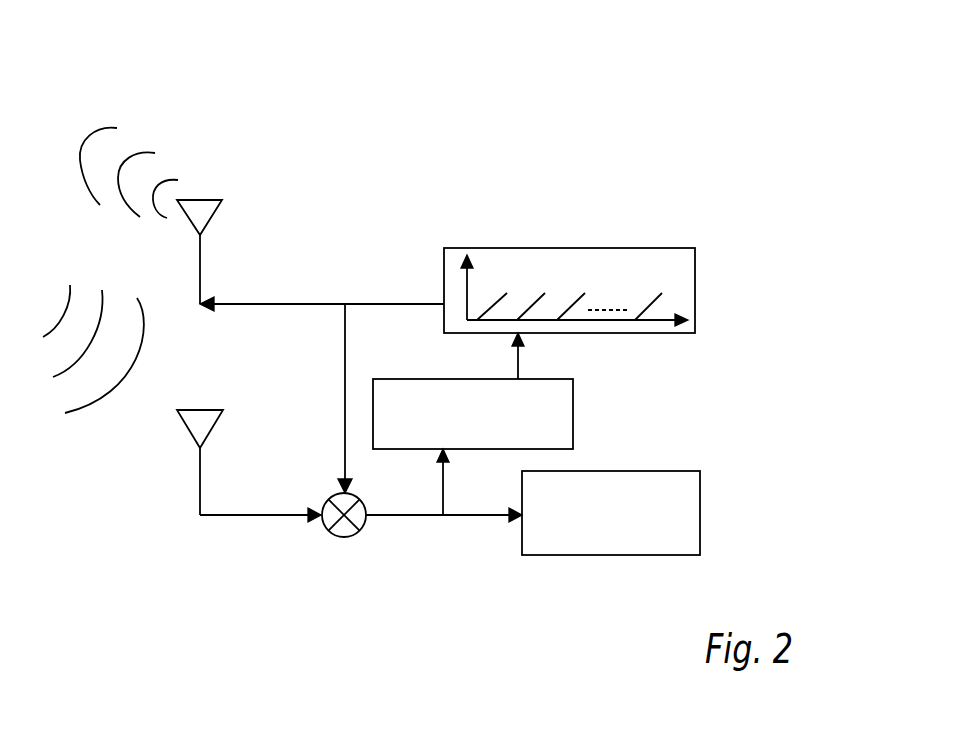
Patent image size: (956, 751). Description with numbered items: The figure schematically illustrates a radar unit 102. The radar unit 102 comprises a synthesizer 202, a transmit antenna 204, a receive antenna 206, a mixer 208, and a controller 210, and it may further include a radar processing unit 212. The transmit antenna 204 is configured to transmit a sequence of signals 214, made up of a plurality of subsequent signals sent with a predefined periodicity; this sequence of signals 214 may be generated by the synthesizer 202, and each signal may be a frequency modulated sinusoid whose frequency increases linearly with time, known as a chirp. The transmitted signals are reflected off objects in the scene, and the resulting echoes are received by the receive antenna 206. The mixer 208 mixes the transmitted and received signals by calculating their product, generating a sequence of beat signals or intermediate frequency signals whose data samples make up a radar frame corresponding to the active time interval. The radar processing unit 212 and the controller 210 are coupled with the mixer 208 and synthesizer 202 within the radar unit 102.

The radar unit 102 is at (757, 210).
The synthesizer 202 is at (538, 248).
The transmit antenna 204 is at (200, 270).
The receive antenna 206 is at (200, 482).
The mixer 208 is at (321, 523).
The controller 210 is at (573, 422).
The radar processing unit 212 is at (675, 471).
The sequence of signals 214 is at (357, 304).